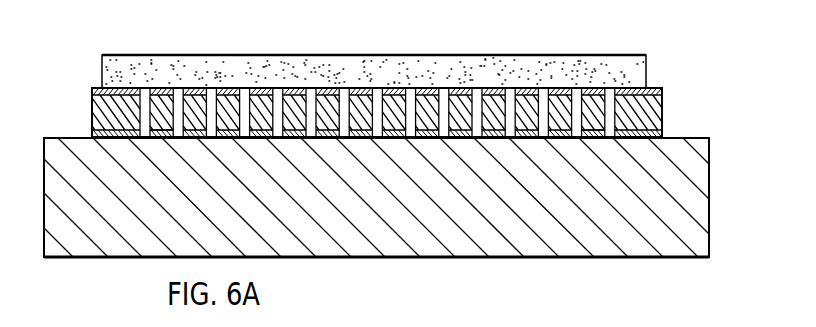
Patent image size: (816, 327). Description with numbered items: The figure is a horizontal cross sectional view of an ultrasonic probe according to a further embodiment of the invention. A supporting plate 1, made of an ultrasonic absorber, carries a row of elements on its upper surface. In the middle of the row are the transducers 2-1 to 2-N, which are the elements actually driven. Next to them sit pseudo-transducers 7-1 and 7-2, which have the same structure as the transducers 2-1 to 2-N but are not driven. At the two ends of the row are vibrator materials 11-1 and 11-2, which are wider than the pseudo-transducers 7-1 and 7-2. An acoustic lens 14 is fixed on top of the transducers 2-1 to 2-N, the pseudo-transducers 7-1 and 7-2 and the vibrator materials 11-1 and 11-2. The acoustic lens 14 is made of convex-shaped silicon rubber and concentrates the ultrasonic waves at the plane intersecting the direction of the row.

The supporting plate 1 is at (702, 180).
The acoustic lens 14 is at (479, 55).
The vibrator material 11-1 is at (92, 107).
The vibrator material 11-2 is at (662, 97).
The pseudo-transducer 7-1 is at (159, 138).
The pseudo-transducer 7-2 is at (585, 137).
The transducer 2-1 is at (193, 137).
The transducer 2-N is at (560, 137).